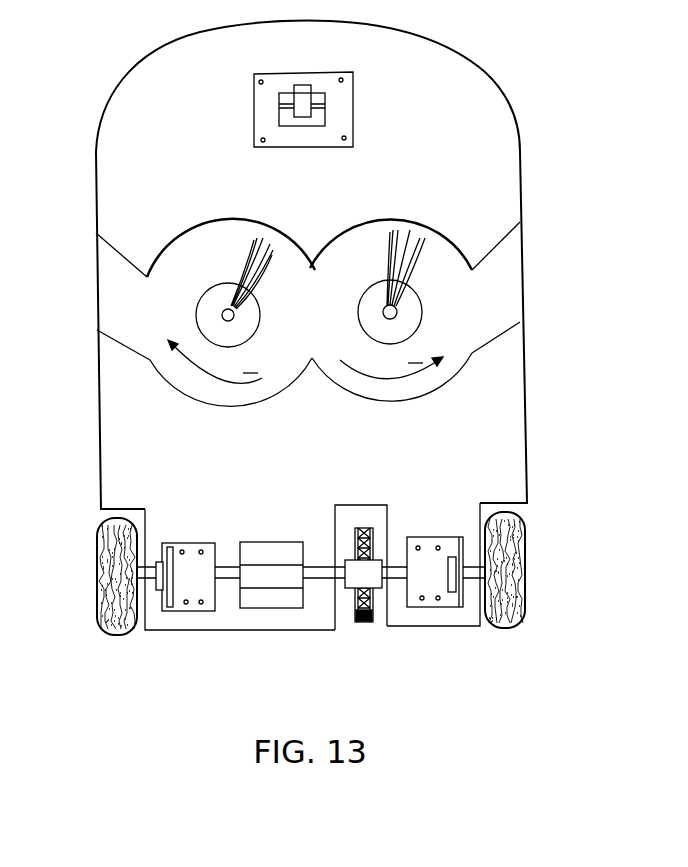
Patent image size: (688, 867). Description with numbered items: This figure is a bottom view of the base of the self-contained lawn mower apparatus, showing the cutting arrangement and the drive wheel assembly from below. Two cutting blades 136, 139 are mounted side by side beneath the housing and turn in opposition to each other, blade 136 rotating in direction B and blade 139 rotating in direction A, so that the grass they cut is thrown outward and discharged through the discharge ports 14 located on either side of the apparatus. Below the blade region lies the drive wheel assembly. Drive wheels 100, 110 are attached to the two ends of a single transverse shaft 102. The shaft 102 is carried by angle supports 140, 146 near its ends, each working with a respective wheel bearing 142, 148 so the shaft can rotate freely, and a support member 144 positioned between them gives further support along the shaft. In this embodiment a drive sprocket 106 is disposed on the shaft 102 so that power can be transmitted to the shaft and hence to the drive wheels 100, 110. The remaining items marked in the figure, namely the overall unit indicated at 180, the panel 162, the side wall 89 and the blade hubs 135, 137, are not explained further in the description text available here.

The sweeper unit housing 180 is at (497, 62).
The control switch panel 162 is at (338, 72).
The housing side wall 89 is at (97, 203).
The discharge port 14 is at (97, 316).
The left brush hub 135 is at (222, 315).
The cutting blade 136 is at (248, 254).
The right brush hub 137 is at (393, 315).
The cutting blade 139 is at (388, 248).
The drive sprocket 106 is at (372, 548).
The shaft 102 is at (229, 581).
The support member 144 is at (287, 556).
The angle support 146 is at (166, 548).
The wheel bearing 142 is at (466, 558).
The wheel bearing 148 is at (156, 593).
The angle support 140 is at (436, 607).
The drive wheel 110 is at (97, 580).
The drive wheel 100 is at (520, 585).